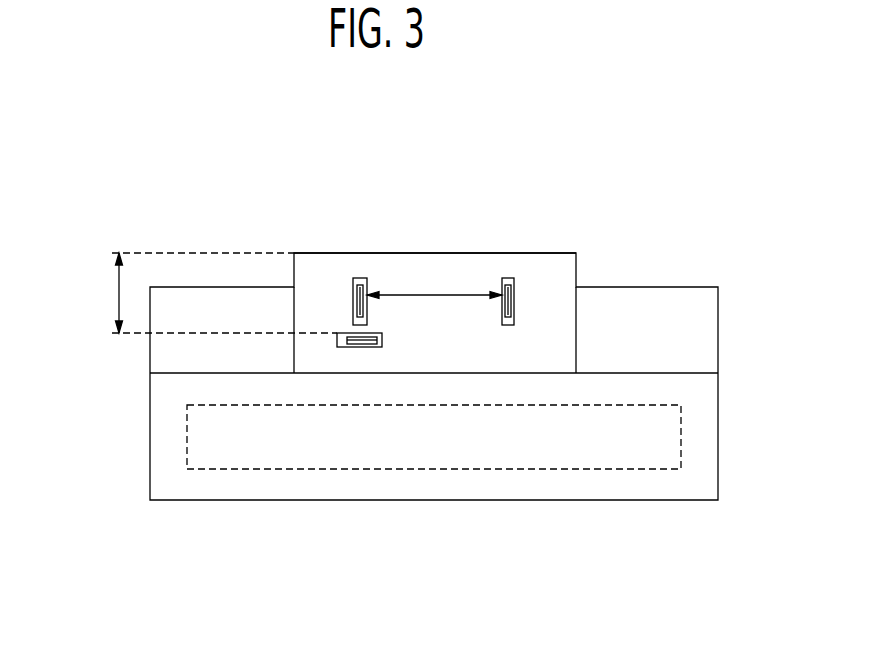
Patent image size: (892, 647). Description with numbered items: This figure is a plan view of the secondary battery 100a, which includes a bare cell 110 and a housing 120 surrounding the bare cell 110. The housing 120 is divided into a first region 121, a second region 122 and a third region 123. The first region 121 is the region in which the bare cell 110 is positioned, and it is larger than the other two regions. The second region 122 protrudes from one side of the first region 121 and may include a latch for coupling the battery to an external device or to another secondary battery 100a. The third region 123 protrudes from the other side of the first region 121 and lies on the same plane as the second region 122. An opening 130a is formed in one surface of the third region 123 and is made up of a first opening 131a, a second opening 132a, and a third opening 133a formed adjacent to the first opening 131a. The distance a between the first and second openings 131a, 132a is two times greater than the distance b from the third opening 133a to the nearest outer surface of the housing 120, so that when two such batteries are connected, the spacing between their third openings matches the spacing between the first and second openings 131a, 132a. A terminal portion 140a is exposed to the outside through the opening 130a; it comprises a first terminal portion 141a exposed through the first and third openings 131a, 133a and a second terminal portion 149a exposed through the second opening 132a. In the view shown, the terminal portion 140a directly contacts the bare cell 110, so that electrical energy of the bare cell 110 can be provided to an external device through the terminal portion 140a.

The secondary battery 100a is at (86, 143).
The bare cell 110 is at (666, 441).
The housing 120 is at (138, 461).
The first region 121 is at (712, 406).
The second region 122 is at (712, 319).
The third region 123 is at (556, 267).
The opening 130a is at (530, 167).
The first opening 131a is at (360, 273).
The second opening 132a is at (510, 273).
The third opening 133a is at (382, 318).
The terminal portion 140a is at (488, 553).
The first terminal portion 141a is at (353, 303).
The second terminal portion 149a is at (502, 308).